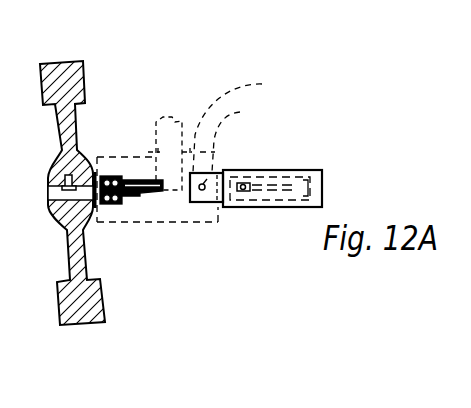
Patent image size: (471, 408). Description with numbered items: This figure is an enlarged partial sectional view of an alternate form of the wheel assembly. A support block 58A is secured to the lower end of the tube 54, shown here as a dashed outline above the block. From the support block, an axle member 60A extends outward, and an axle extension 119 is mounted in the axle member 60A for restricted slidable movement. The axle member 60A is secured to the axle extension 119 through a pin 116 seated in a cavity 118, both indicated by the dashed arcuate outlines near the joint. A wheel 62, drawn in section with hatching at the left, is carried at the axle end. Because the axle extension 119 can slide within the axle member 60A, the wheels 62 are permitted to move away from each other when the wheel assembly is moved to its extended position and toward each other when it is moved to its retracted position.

The wheel 62 is at (80, 62).
The tube 54 is at (173, 112).
The support block 58A is at (152, 222).
The pin 116 is at (236, 112).
The cavity 118 is at (255, 84).
The axle extension 119 is at (230, 208).
The axle member 60A is at (301, 170).